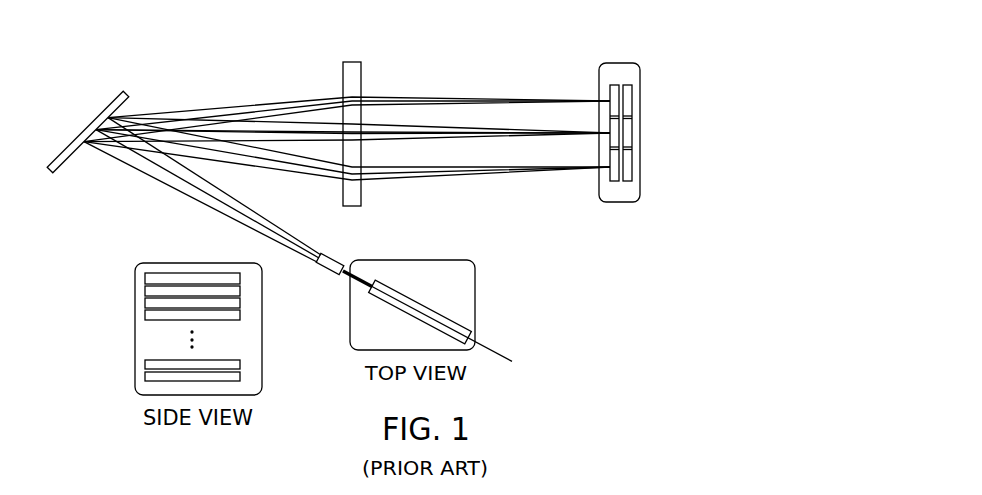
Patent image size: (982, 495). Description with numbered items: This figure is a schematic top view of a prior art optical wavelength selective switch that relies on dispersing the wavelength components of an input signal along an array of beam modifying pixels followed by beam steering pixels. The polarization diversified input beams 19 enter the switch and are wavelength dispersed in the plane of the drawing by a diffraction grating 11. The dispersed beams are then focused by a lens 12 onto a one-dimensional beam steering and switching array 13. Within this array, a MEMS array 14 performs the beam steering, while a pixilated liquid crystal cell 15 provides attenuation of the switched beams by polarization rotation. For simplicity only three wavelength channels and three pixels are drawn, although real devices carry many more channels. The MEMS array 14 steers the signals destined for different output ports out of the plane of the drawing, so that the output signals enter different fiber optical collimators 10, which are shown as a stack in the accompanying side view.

The fiber optical collimators 10 is at (142, 276).
The diffraction grating 11 is at (108, 108).
The lens 12 is at (362, 78).
The one-dimensional beam steering and switching array 13 is at (637, 202).
The MEMS array 14 is at (627, 84).
The pixilated liquid crystal cell 15 is at (611, 96).
The polarization diversified input beams 19 is at (333, 257).